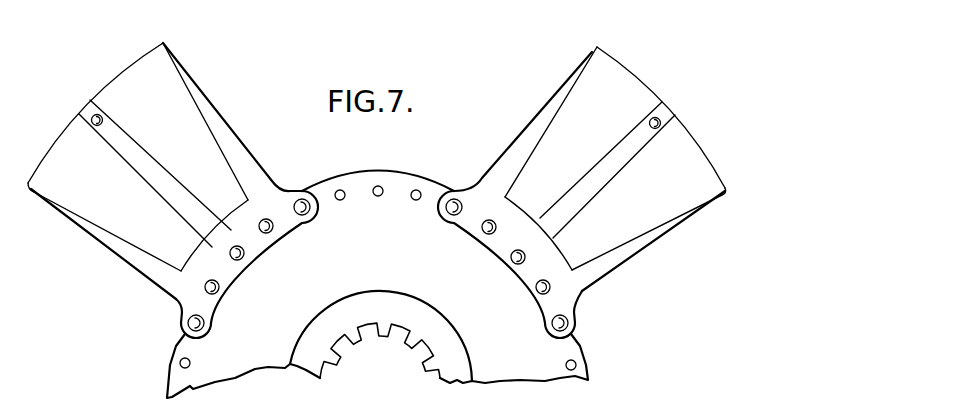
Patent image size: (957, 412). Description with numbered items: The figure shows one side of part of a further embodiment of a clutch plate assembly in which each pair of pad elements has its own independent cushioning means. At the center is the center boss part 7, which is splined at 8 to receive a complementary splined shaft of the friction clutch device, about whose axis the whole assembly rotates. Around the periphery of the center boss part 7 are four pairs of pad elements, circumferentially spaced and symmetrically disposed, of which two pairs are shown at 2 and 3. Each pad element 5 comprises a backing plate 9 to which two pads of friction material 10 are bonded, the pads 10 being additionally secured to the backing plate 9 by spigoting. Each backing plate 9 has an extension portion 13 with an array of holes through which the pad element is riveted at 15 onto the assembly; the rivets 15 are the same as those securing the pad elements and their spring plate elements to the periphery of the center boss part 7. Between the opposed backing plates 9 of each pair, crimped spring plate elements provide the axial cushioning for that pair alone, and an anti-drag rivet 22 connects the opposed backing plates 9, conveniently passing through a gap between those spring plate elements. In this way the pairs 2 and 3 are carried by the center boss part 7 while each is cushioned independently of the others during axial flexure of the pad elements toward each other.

The pair of pad elements 2 is at (134, 53).
The pair of pad elements 3 is at (633, 67).
The pad element 5 is at (81, 241).
The center boss part 7 is at (578, 363).
The splines 8 is at (428, 357).
The backing plate 9 is at (118, 245).
The pads of friction material 10 is at (118, 92).
The extension portion 13 is at (175, 283).
The rivets 15 is at (245, 256).
The anti-drag rivet 22 is at (92, 115).